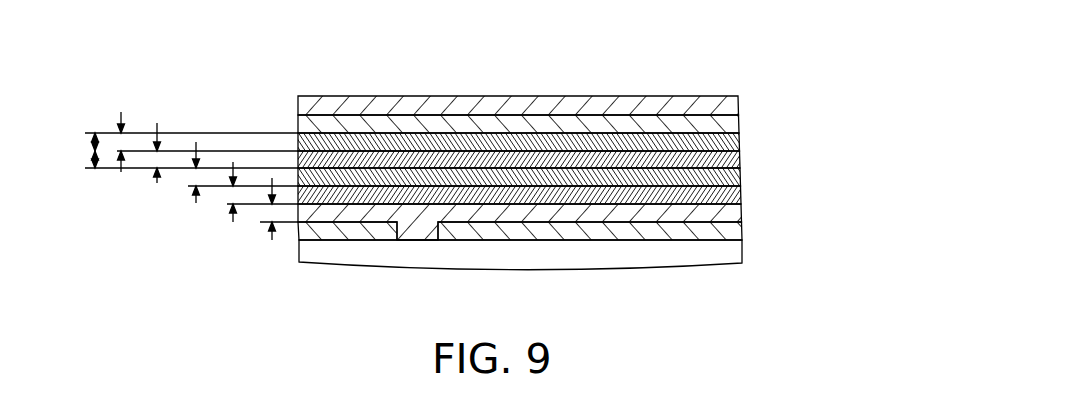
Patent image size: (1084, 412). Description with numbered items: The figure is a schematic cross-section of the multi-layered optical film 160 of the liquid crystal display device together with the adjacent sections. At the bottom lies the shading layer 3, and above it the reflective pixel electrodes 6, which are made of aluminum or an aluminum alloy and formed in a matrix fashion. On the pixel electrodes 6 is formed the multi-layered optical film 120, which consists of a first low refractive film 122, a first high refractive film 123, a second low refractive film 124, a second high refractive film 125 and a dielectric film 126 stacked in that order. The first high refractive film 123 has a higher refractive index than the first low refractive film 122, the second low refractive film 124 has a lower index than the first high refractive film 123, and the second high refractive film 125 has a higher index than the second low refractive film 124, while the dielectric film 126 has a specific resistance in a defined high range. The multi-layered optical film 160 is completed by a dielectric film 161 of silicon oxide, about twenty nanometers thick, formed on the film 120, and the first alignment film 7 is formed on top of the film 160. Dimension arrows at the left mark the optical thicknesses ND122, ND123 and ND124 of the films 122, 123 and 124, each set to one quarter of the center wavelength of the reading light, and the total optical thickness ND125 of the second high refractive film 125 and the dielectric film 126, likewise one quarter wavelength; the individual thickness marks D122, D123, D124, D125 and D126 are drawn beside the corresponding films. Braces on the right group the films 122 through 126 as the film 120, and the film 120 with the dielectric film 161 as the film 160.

The shading layer 3 is at (732, 255).
The reflective pixel electrodes 6 is at (733, 232).
The first alignment film 7 is at (739, 97).
The multi-layered optical film 120 is at (588, 183).
The first low refractive film 122 is at (557, 224).
The first high refractive film 123 is at (735, 195).
The second low refractive film 124 is at (735, 177).
The second high refractive film 125 is at (735, 159).
The dielectric film 126 is at (735, 142).
The multi-layered optical film 160 is at (620, 169).
The dielectric film 161 is at (735, 122).
The total optical thickness ND125 is at (94, 147).
The thickness of layer 126 D126 is at (122, 148).
The thickness of layer 125 D125 is at (152, 164).
The optical thickness ND124 is at (193, 180).
The thickness of layer 124 D124 is at (165, 190).
The optical thickness ND123 is at (228, 201).
The thickness of layer 123 D123 is at (201, 216).
The optical thickness ND122 is at (263, 223).
The thickness of layer 122 D122 is at (276, 242).